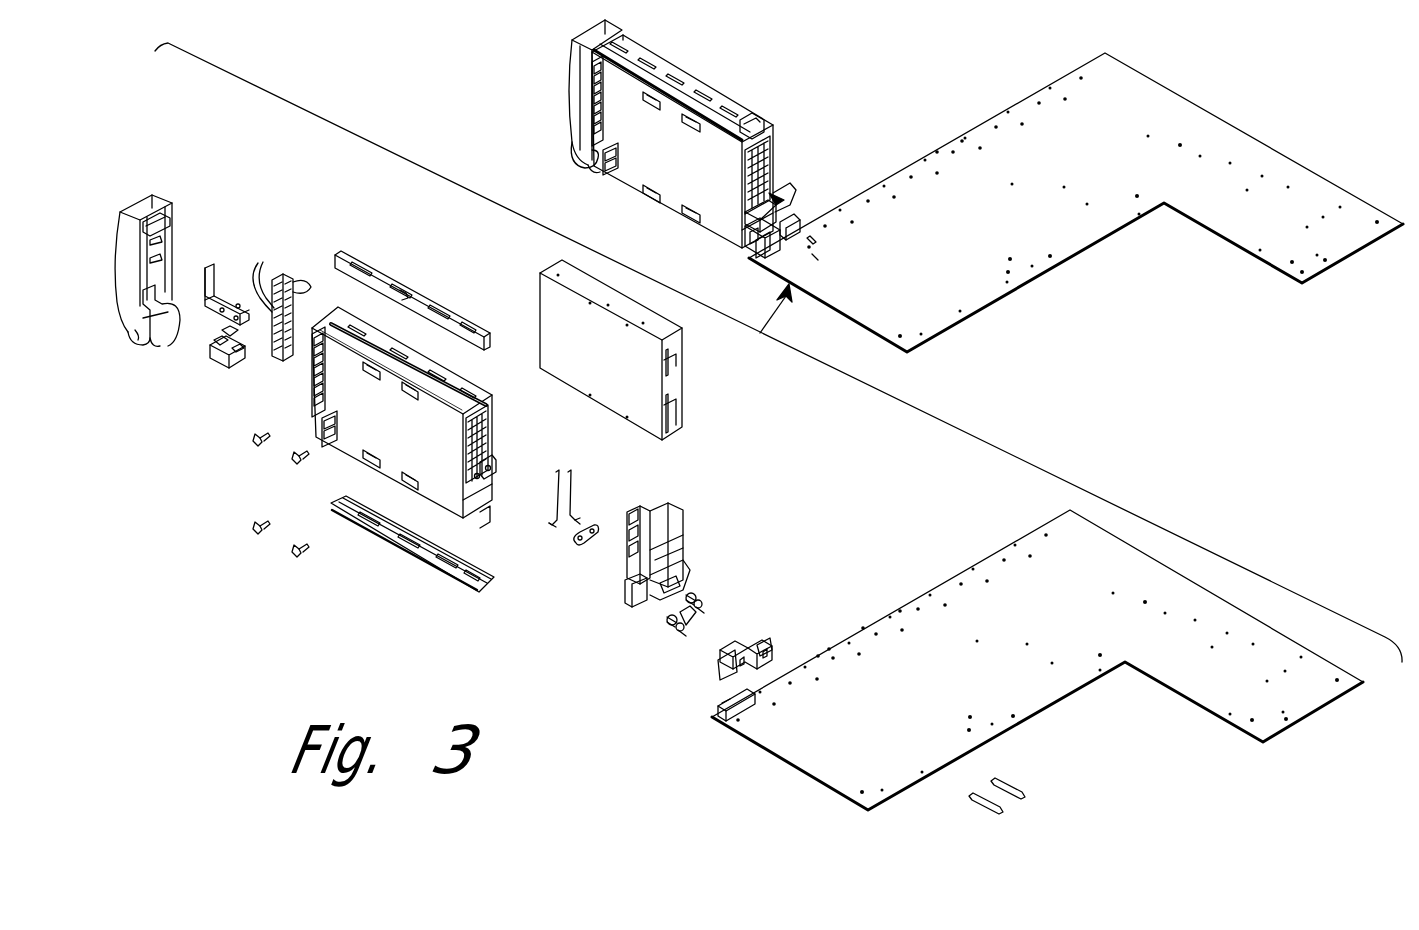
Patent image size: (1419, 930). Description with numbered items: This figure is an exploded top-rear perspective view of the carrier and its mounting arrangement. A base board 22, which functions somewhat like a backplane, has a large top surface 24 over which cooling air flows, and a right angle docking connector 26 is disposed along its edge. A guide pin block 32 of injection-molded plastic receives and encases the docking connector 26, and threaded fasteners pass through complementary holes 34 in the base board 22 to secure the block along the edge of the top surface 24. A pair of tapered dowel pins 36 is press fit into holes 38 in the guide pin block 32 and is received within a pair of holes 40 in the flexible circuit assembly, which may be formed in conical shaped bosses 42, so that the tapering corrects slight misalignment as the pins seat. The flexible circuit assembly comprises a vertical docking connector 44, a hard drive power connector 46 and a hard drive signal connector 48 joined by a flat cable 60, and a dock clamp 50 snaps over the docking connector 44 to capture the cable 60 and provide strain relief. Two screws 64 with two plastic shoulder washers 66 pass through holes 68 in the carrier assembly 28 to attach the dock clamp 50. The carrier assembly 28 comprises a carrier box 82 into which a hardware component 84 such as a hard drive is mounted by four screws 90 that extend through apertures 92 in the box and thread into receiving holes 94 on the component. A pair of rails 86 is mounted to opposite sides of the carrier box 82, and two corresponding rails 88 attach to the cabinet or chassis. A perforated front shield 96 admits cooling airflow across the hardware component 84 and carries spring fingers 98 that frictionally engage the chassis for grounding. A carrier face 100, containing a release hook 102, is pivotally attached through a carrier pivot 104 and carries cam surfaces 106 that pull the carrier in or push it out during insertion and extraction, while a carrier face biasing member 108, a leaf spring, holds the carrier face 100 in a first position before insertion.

The base board 22 is at (1224, 588).
The top surface 24 is at (1087, 632).
The docking connector 26 is at (744, 714).
The carrier assembly 28 is at (712, 220).
The guide pin block 32 is at (770, 257).
The complementary holes 34 is at (961, 140).
The tapered dowel pins 36 is at (1012, 788).
The holes 38 is at (767, 637).
The holes 40 is at (700, 604).
The conical shaped bosses 42 is at (790, 217).
The vertical docking connector 44 is at (685, 620).
The hard drive power connector 46 is at (630, 593).
The hard drive signal connector 48 is at (634, 527).
The dock clamp 50 is at (778, 197).
The flat cable 60 is at (775, 157).
The screws 64 is at (558, 497).
The plastic shoulder washers 66 is at (588, 523).
The holes 68 is at (488, 464).
The carrier box 82 is at (705, 165).
The hardware component 84 is at (623, 364).
The rails 86 is at (752, 117).
The corresponding rails 88 is at (695, 90).
The screws 90 is at (690, 214).
The apertures 92 is at (406, 396).
The receiving holes 94 is at (626, 326).
The front shield 96 is at (585, 85).
The spring fingers 98 is at (597, 138).
The carrier face 100 is at (578, 60).
The release hook 102 is at (172, 227).
The carrier pivot 104 is at (224, 362).
The cam surface 106 is at (594, 168).
The carrier face biasing member 108 is at (216, 270).